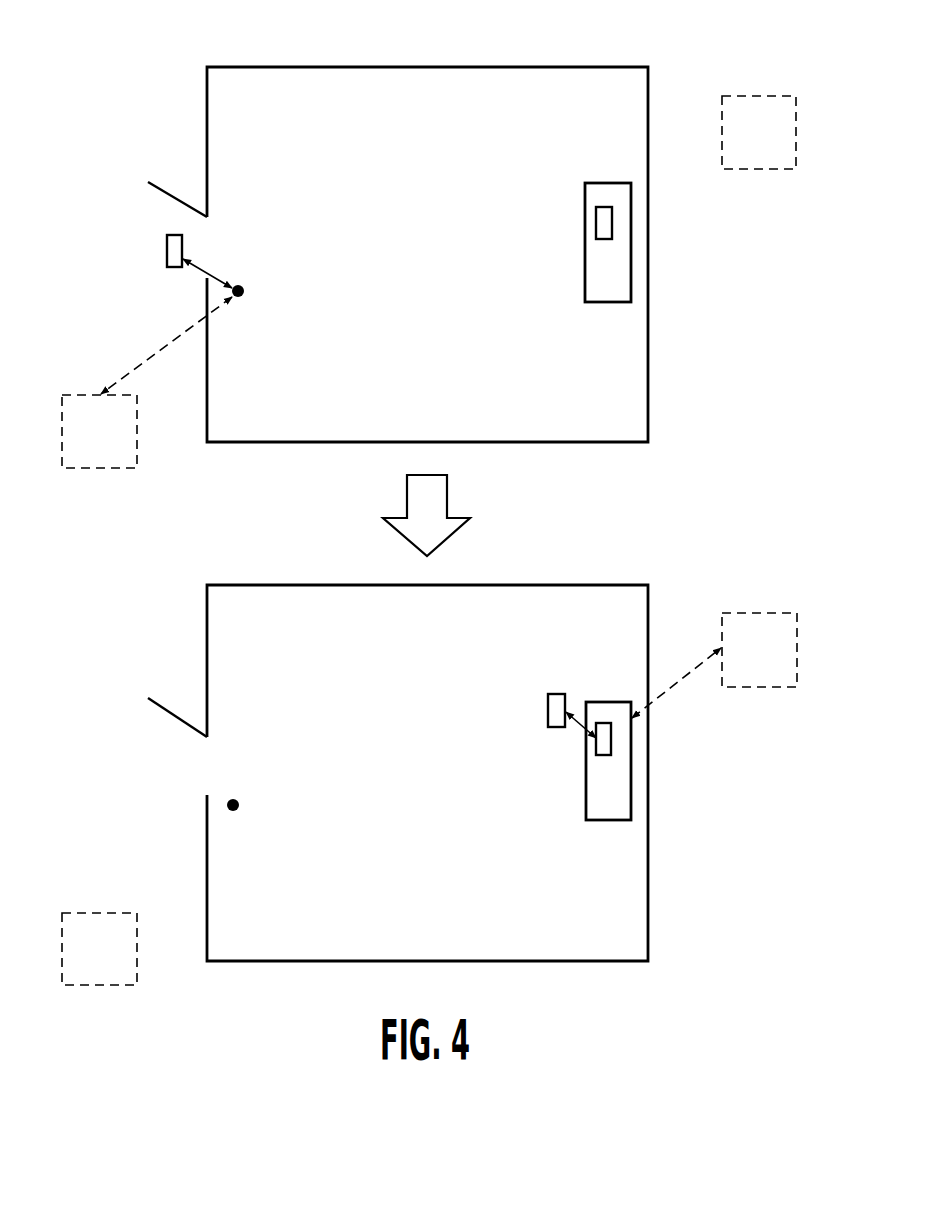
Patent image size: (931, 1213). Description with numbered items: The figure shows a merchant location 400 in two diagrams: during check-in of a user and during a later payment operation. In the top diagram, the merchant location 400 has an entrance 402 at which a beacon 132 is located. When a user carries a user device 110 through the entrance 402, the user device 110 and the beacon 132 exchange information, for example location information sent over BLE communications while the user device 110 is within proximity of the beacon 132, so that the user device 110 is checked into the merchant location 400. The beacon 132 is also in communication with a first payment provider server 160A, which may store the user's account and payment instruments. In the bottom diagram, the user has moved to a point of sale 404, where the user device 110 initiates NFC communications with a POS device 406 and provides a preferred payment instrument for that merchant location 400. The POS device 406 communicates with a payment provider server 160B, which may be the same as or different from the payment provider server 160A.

The merchant location 400 is at (571, 67).
The entrance 402 is at (234, 231).
The user device 110 is at (166, 254).
The beacon 132 is at (245, 291).
The payment provider server 160A is at (113, 470).
The payment provider server 160B is at (773, 171).
The point of sale 404 is at (600, 303).
The POS device 406 is at (596, 228).